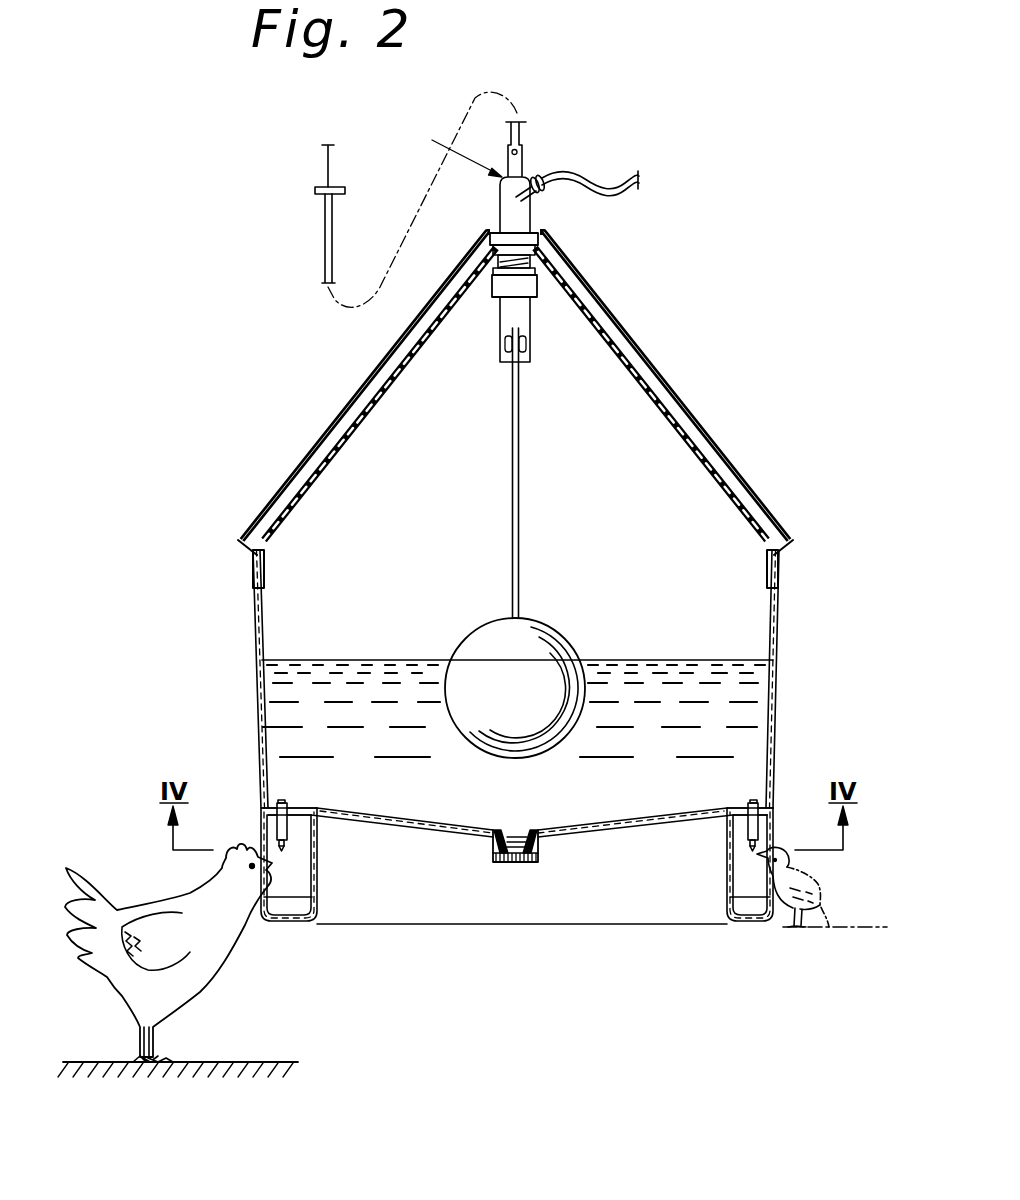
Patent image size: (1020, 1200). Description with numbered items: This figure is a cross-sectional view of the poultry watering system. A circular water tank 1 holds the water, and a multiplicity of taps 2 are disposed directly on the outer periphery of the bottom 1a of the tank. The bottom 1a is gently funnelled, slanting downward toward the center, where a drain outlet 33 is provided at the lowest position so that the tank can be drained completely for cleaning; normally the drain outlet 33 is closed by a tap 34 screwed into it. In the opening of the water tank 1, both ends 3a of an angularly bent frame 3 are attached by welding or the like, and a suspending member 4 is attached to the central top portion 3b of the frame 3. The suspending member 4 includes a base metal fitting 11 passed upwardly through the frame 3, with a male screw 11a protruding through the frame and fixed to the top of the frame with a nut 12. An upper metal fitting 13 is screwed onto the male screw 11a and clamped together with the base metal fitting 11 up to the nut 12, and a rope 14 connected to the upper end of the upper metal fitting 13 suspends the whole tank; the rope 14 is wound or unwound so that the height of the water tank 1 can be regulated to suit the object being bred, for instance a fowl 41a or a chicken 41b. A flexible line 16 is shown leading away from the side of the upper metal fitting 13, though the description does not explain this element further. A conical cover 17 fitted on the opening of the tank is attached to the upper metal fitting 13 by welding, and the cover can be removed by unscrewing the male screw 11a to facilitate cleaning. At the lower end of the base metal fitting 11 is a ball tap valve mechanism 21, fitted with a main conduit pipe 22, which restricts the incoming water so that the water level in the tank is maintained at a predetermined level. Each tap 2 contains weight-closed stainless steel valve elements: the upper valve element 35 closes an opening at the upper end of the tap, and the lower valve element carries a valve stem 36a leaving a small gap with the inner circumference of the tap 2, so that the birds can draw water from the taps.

The water tank 1 is at (252, 621).
The bottom of the water tank 1a is at (423, 830).
The tap 2 is at (274, 822).
The frame 3 is at (355, 441).
The ends of the frame 3a is at (266, 567).
The central top portion of the frame 3b is at (566, 302).
The suspending member 4 is at (422, 199).
The base metal fitting 11 is at (492, 286).
The male screw 11a is at (499, 262).
The nut 12 is at (540, 250).
The upper metal fitting 13 is at (501, 203).
The rope 14 is at (325, 163).
The water hose 16 is at (590, 174).
The conical cover 17 is at (672, 392).
The ball tap valve mechanism 21 is at (548, 340).
The main conduit pipe 22 is at (503, 318).
The drain outlet 33 is at (540, 846).
The tap 34 is at (515, 864).
The upper valve element 35 is at (278, 803).
The valve stem 36a is at (290, 855).
The fowl 41a is at (230, 968).
The chicken 41b is at (826, 932).